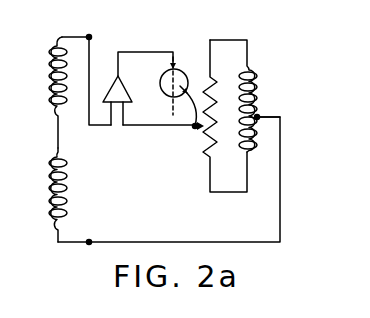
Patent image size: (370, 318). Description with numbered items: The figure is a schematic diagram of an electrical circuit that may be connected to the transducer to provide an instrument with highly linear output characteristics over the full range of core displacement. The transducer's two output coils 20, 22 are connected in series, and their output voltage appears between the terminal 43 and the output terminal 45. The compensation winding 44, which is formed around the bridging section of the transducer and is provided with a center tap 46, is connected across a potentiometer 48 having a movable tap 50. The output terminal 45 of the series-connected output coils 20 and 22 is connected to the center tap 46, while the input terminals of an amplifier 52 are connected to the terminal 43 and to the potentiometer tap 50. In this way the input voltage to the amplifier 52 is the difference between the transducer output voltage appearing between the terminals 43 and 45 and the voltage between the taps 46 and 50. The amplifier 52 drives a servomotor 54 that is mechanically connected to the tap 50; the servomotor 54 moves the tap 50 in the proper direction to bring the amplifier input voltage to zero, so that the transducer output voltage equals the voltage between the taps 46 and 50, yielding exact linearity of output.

The output coil 20 is at (50, 82).
The output coil 22 is at (50, 183).
The terminal 43 is at (89, 37).
The compensation winding 44 is at (257, 80).
The output terminal 45 is at (89, 242).
The center tap 46 is at (257, 117).
The potentiometer 48 is at (208, 80).
The movable tap 50 is at (195, 126).
The amplifier 52 is at (113, 90).
The servomotor 54 is at (163, 119).